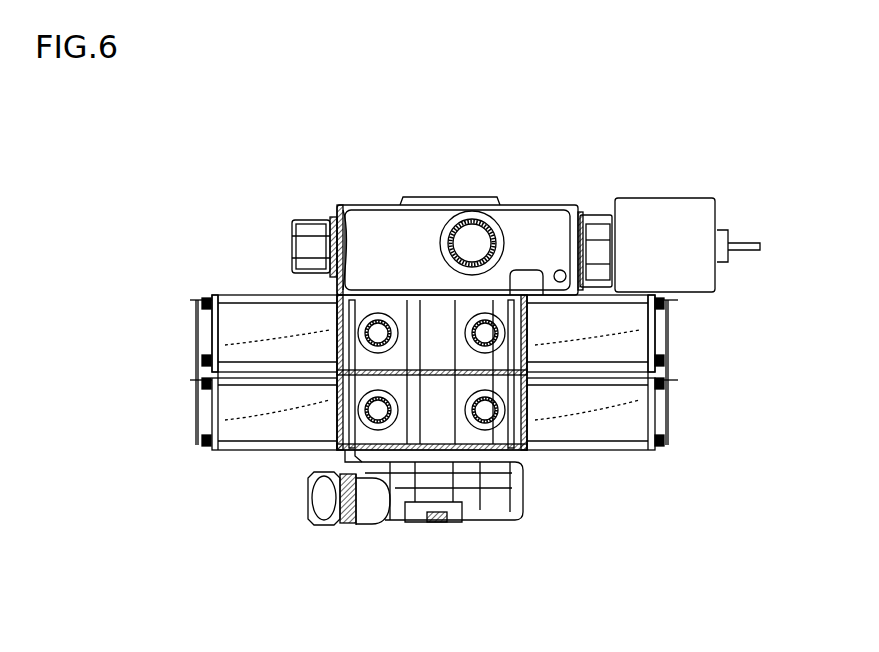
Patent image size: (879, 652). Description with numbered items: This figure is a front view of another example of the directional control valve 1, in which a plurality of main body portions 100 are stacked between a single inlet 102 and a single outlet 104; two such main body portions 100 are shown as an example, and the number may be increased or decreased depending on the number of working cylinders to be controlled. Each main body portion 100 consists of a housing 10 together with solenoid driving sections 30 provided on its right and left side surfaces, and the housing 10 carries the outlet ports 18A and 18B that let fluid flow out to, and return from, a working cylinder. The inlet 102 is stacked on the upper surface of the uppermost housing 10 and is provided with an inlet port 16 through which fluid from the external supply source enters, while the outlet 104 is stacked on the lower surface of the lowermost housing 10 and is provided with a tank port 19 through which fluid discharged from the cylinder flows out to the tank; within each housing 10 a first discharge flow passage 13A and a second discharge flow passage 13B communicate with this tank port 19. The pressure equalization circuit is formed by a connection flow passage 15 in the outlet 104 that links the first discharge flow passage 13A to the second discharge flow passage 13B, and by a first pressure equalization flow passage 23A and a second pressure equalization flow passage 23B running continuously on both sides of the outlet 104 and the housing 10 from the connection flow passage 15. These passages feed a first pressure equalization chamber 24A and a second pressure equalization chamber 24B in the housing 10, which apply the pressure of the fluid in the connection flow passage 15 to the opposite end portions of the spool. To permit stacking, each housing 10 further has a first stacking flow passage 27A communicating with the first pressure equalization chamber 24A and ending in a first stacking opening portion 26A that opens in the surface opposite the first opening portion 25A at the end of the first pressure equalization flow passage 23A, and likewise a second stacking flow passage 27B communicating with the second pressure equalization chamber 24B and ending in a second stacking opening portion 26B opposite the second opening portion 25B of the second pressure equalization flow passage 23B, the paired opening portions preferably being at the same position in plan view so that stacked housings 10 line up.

The directional control valve 1 is at (742, 196).
The housing 10 is at (440, 200).
The inlet 102 is at (394, 205).
The outlet 104 is at (421, 526).
The first discharge flow passage 13A is at (462, 297).
The second discharge flow passage 13B is at (437, 297).
The connection flow passage 15 is at (520, 513).
The inlet port 16 is at (476, 210).
The outlet port 18A is at (474, 297).
The outlet port 18B is at (406, 297).
The tank port 19 is at (328, 530).
The first pressure equalization flow passage 23A is at (563, 297).
The second pressure equalization flow passage 23B is at (300, 297).
The first pressure equalization chamber 24A is at (537, 297).
The second pressure equalization chamber 24B is at (328, 297).
The first opening portion 25A is at (665, 312).
The second opening portion 25B is at (210, 310).
The first stacking opening portion 26A is at (500, 297).
The second stacking opening portion 26B is at (376, 297).
The first stacking flow passage 27A is at (513, 297).
The second stacking flow passage 27B is at (362, 297).
The solenoid driving section 30 is at (212, 330).
The main body portion 100 is at (679, 340).